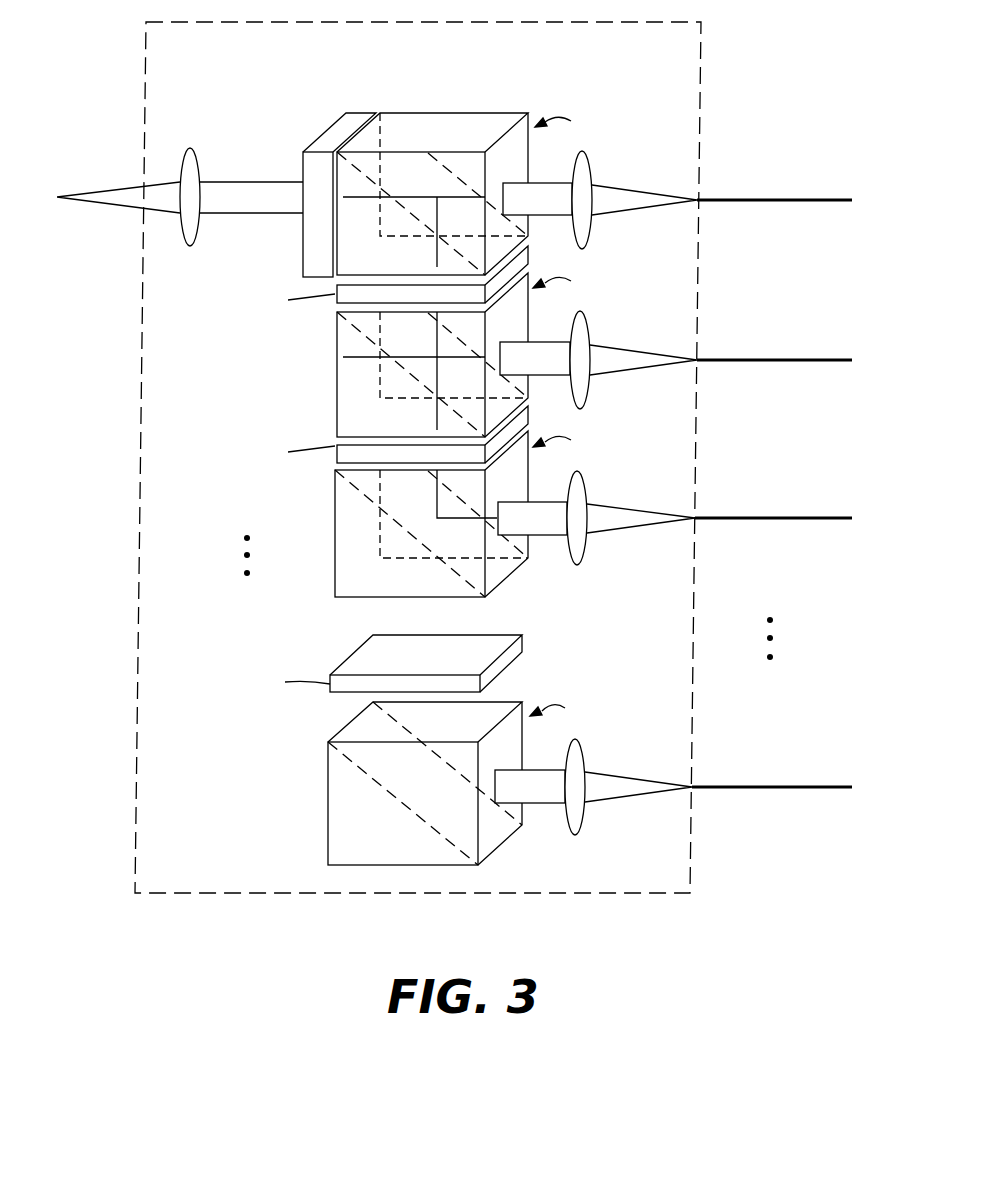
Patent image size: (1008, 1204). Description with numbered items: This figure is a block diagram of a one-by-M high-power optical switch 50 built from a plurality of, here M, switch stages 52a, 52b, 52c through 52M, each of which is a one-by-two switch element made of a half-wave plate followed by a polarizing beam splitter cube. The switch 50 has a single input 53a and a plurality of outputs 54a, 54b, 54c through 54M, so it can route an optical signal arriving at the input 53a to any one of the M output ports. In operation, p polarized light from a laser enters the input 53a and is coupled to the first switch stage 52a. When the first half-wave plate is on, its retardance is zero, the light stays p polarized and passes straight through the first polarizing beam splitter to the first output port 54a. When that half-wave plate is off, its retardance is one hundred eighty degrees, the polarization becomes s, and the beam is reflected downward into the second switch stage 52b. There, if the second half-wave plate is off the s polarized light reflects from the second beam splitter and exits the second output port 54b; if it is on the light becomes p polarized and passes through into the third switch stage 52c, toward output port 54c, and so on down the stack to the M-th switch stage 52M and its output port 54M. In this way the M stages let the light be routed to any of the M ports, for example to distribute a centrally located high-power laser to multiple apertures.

The switch 50 is at (672, 58).
The first switch stage 52a is at (442, 102).
The second switch stage 52b is at (316, 357).
The third switch stage 52c is at (316, 499).
The M-th switch stage 52M is at (312, 798).
The input 53a is at (80, 192).
The first output port 54a is at (748, 200).
The second output port 54b is at (745, 360).
The third output port 54c is at (743, 518).
The M-th output port 54M is at (740, 787).